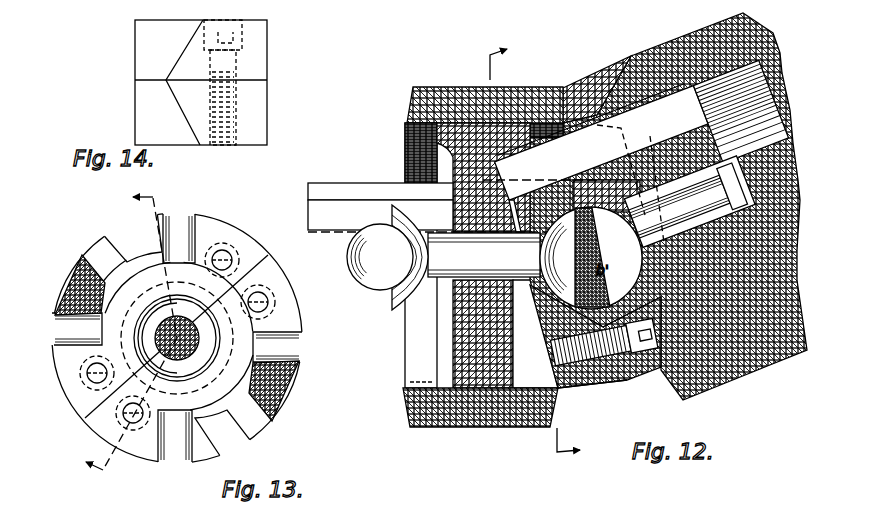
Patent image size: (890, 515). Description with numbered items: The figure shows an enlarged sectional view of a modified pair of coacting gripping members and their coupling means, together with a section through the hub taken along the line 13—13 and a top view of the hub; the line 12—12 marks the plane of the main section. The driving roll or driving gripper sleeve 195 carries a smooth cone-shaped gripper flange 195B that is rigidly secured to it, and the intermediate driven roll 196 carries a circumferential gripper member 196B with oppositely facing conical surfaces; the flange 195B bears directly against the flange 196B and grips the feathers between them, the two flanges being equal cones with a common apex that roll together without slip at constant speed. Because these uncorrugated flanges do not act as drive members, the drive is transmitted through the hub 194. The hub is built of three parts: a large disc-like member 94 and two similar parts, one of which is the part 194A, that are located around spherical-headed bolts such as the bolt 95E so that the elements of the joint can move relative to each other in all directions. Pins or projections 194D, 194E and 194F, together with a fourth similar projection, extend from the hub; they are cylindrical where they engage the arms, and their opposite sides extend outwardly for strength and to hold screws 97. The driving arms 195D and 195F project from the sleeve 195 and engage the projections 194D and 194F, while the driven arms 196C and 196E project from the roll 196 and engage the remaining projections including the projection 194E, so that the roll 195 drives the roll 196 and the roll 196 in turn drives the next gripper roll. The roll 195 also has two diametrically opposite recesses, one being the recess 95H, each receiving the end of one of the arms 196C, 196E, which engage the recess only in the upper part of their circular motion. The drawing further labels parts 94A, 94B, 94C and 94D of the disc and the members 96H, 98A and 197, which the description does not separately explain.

In FIG. 13, the section line 12- 12 is at (125, 341).
In FIG. 12, the section line 13 is at (521, 257).
In FIG. 14, the large disc-like member 94 is at (263, 33).
In FIG. 13, the disk outer face 94A is at (302, 313).
In FIG. 14, the disk lower portion 94B is at (263, 130).
In FIG. 13, the disk lower portion 94B is at (73, 413).
In FIG. 12, the disk lower portion 94B is at (560, 187).
In FIG. 13, the disk slot 94C is at (53, 315).
In FIG. 14, the V-shaped groove 94D is at (145, 97).
In FIG. 12, the spherical-headed bolt 95E is at (742, 200).
In FIG. 12, the recess 95H is at (670, 112).
In FIG. 12, the guide bar 96H is at (449, 185).
In FIG. 12, the screws 97 is at (633, 357).
In FIG. 12, the ball-ended shaft 98A is at (443, 265).
In FIG. 12, the hub 194 is at (627, 383).
In FIG. 12, the hub part 194A is at (587, 386).
In FIG. 13, the projection 194D is at (180, 214).
In FIG. 13, the projection 194E is at (298, 347).
In FIG. 13, the projection 194F is at (170, 462).
In FIG. 12, the driving gripper sleeve 195 is at (671, 48).
In FIG. 12, the cone-shaped gripper flange 195B is at (593, 78).
In FIG. 13, the driving arm 195D is at (133, 228).
In FIG. 12, the driving arm 195D is at (642, 149).
In FIG. 13, the driving arm 195F is at (219, 449).
In FIG. 12, the intermediate driven roll 196 is at (452, 157).
In FIG. 12, the gripper member 196B is at (549, 88).
In FIG. 13, the driven arm 196C is at (80, 268).
In FIG. 12, the driven arm 196C is at (337, 222).
In FIG. 13, the driven arm 196E is at (277, 397).
In FIG. 14, the screw 197 is at (234, 117).
In FIG. 13, the screw 197 is at (225, 257).